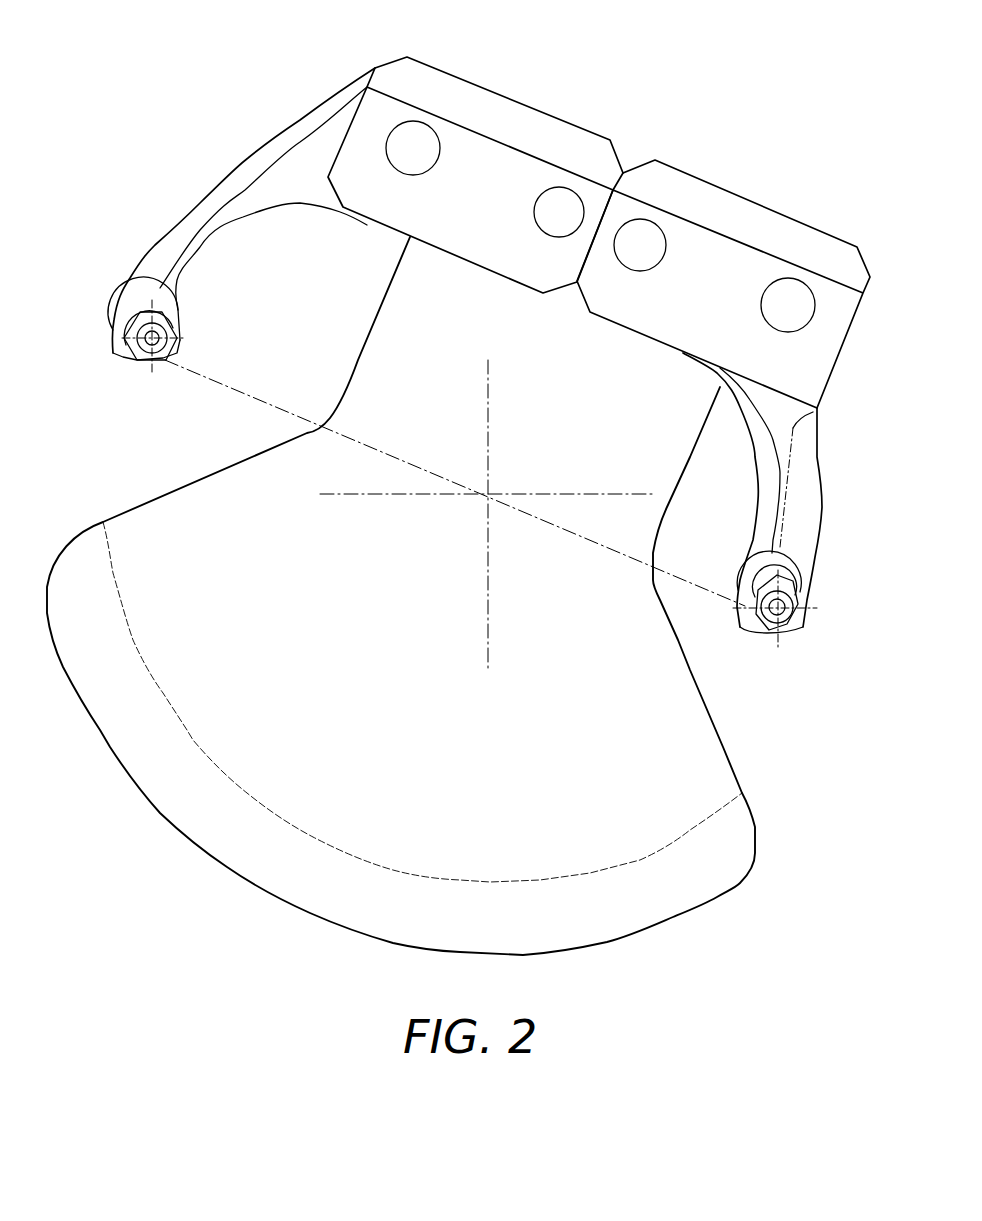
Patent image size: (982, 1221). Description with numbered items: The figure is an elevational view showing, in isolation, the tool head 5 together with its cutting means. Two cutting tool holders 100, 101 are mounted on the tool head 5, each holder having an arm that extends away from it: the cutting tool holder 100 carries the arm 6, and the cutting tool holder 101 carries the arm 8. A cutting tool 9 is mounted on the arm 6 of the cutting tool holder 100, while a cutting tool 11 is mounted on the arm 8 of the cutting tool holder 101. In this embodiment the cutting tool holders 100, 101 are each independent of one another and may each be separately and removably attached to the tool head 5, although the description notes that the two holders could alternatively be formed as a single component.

The tool head 5 is at (401, 596).
The arm 6 is at (800, 483).
The arm 8 is at (227, 213).
The cutting tool 9 is at (803, 617).
The cutting tool 11 is at (182, 353).
The cutting tool holder 100 is at (743, 265).
The cutting tool holder 101 is at (380, 123).